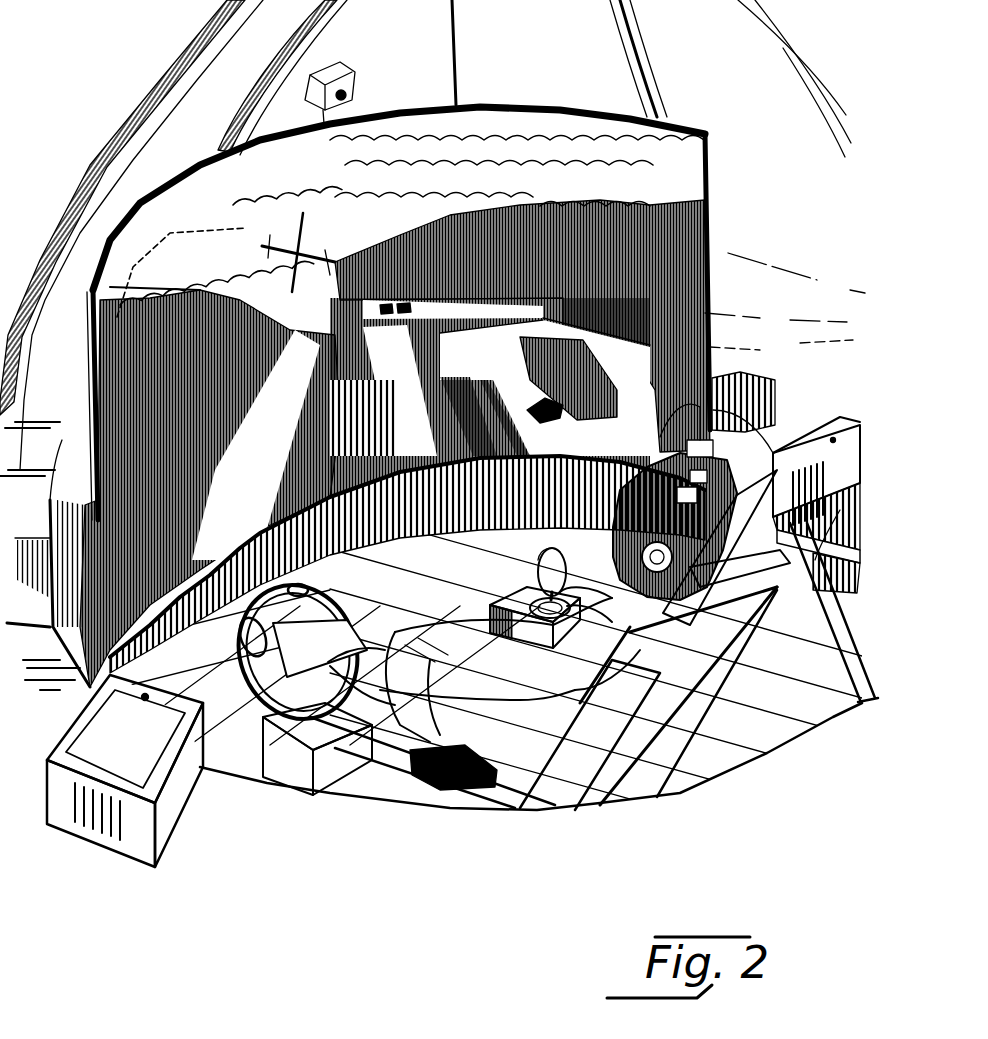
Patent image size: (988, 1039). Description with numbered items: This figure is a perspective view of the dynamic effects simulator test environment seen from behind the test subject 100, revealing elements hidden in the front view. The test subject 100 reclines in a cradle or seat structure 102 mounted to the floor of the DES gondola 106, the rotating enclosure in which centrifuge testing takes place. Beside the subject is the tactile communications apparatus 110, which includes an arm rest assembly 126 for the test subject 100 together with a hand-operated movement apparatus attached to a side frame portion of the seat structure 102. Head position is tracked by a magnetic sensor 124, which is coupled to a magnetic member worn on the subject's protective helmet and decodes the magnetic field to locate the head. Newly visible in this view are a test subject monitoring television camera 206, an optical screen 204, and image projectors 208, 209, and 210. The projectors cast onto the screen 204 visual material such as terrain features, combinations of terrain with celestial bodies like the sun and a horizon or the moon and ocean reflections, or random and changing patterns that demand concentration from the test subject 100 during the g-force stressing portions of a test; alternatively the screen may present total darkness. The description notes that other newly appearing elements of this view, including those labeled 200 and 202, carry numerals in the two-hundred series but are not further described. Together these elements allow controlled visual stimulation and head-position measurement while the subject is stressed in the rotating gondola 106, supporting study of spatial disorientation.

The test subject 100 is at (578, 686).
The cradle or seat structure 102 is at (663, 637).
The DES gondola 106 is at (118, 55).
The tactile communications apparatus 110 is at (354, 612).
The magnetic sensor 124 is at (713, 345).
The arm rest assembly 126 is at (390, 752).
The platform wall 200 is at (457, 537).
The head mounted display 202 is at (665, 478).
The optical screen 204 is at (533, 127).
The test subject monitoring television camera 206 is at (333, 72).
The image projector 208 is at (172, 796).
The image projector 209 is at (845, 276).
The image projector 210 is at (815, 602).